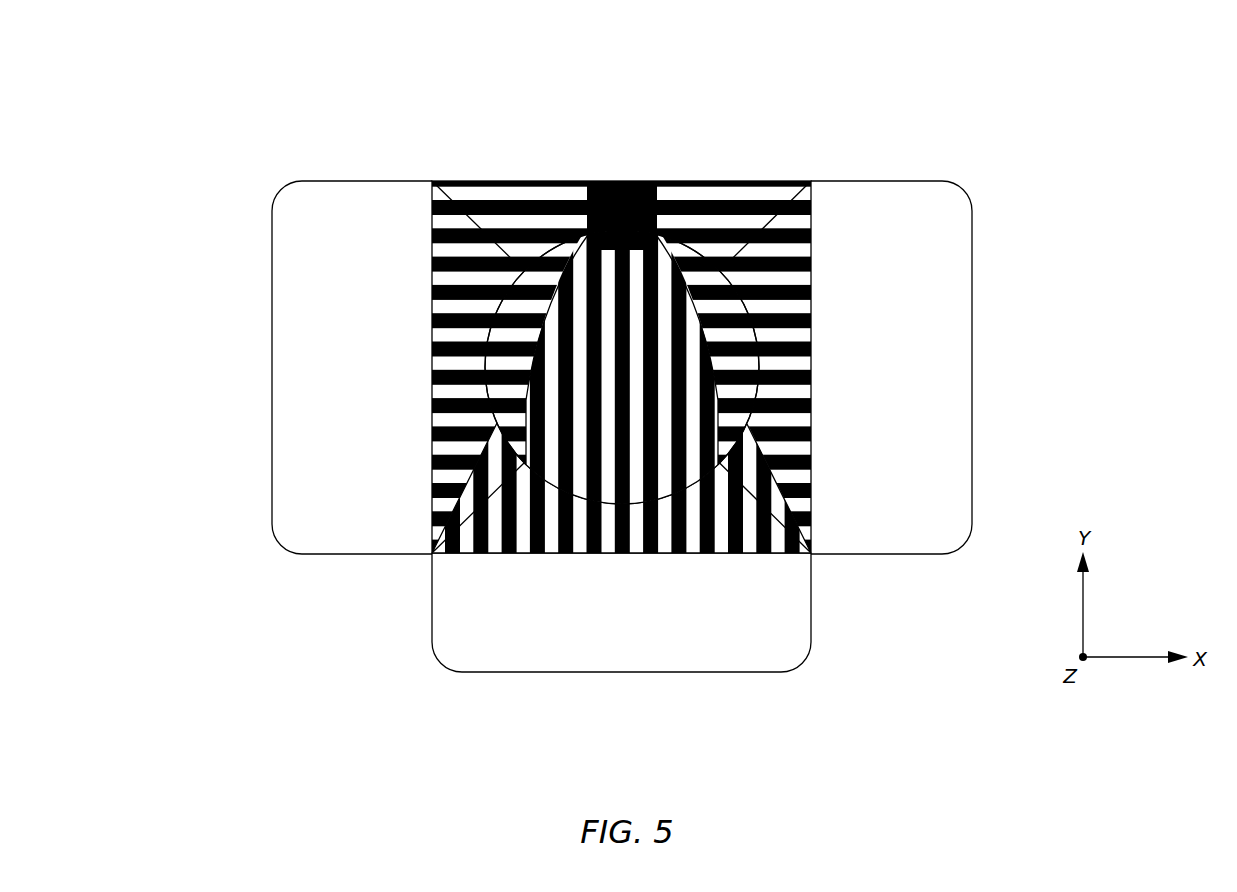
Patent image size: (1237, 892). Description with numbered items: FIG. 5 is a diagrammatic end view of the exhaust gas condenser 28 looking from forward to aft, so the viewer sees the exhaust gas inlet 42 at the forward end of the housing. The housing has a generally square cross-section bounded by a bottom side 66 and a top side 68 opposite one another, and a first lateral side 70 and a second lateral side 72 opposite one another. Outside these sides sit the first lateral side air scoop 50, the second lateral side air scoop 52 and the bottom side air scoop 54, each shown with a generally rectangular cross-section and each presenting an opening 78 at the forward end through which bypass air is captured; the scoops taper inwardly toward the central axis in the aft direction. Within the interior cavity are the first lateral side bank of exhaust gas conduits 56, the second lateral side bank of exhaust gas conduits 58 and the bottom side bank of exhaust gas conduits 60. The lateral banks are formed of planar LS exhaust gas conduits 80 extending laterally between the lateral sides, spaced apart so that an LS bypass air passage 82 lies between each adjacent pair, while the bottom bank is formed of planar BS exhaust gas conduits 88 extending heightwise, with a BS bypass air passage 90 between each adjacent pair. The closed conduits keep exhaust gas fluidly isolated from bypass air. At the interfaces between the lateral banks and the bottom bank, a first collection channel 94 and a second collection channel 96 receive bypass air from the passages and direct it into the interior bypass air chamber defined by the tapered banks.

The exhaust gas condenser 28 is at (1066, 84).
The exhaust gas inlet 42 is at (704, 357).
The first lateral side air scoop 50 is at (170, 406).
The second lateral side air scoop 52 is at (1030, 356).
The bottom side air scoop 54 is at (738, 697).
The first lateral side bank of exhaust gas conduits 56 is at (537, 283).
The second lateral side bank of exhaust gas conduits 58 is at (719, 263).
The bottom side bank of exhaust gas conduits 60 is at (588, 470).
The bottom side 66 is at (495, 554).
The top side 68 is at (681, 233).
The first lateral side 70 is at (432, 476).
The second lateral side 72 is at (812, 488).
The opening 78 is at (594, 464).
The LS exhaust gas conduit 80 is at (811, 237).
The LS bypass air passage 82 is at (800, 222).
The BS exhaust gas conduit 88 is at (765, 554).
The BS bypass air passage 90 is at (748, 554).
The first collection channel 94 is at (493, 333).
The second collection channel 96 is at (717, 361).